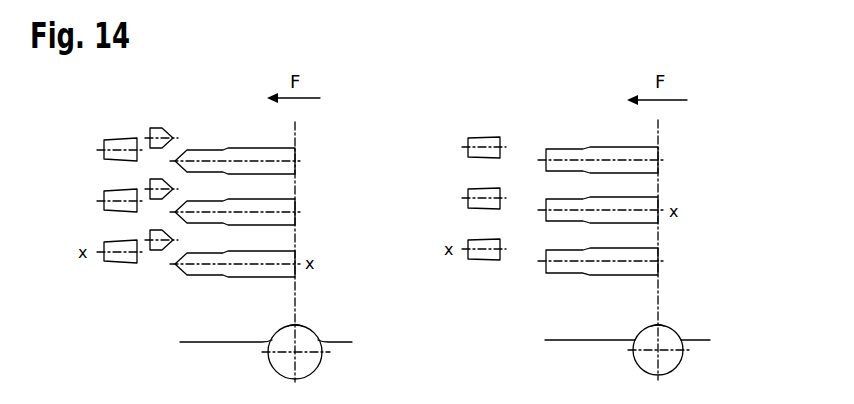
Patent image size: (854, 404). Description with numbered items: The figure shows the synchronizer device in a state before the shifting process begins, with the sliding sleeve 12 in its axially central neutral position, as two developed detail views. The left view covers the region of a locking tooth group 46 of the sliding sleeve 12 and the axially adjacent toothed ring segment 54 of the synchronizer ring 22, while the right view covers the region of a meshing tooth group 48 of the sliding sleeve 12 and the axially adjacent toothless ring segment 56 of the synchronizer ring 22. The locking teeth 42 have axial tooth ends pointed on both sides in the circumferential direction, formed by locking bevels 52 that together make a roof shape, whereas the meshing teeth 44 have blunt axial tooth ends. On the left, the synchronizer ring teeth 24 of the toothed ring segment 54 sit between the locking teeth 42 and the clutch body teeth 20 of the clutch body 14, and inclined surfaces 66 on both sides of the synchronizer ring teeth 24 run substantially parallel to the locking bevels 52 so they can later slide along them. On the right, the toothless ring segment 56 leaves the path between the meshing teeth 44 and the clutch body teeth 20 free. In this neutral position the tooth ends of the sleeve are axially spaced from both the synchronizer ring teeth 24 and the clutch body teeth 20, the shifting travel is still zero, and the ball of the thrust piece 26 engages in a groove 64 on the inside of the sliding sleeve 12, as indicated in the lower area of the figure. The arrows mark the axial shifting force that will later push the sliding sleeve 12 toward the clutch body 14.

The sliding sleeve 12 is at (223, 343).
The clutch body 14 is at (118, 266).
The clutch body teeth 20 is at (118, 160).
The synchronizer ring 22 is at (163, 121).
The synchronizer ring teeth 24 is at (160, 252).
The thrust piece 26 is at (307, 360).
The locking teeth 42 is at (288, 155).
The meshing teeth 44 is at (652, 153).
The locking tooth group 46 is at (244, 139).
The meshing tooth group 48 is at (602, 131).
The locking bevels 52 is at (175, 265).
The toothed ring segments 54 is at (146, 119).
The toothless ring segments 56 is at (523, 131).
The groove 64 is at (298, 326).
The inclined surfaces 66 is at (172, 138).